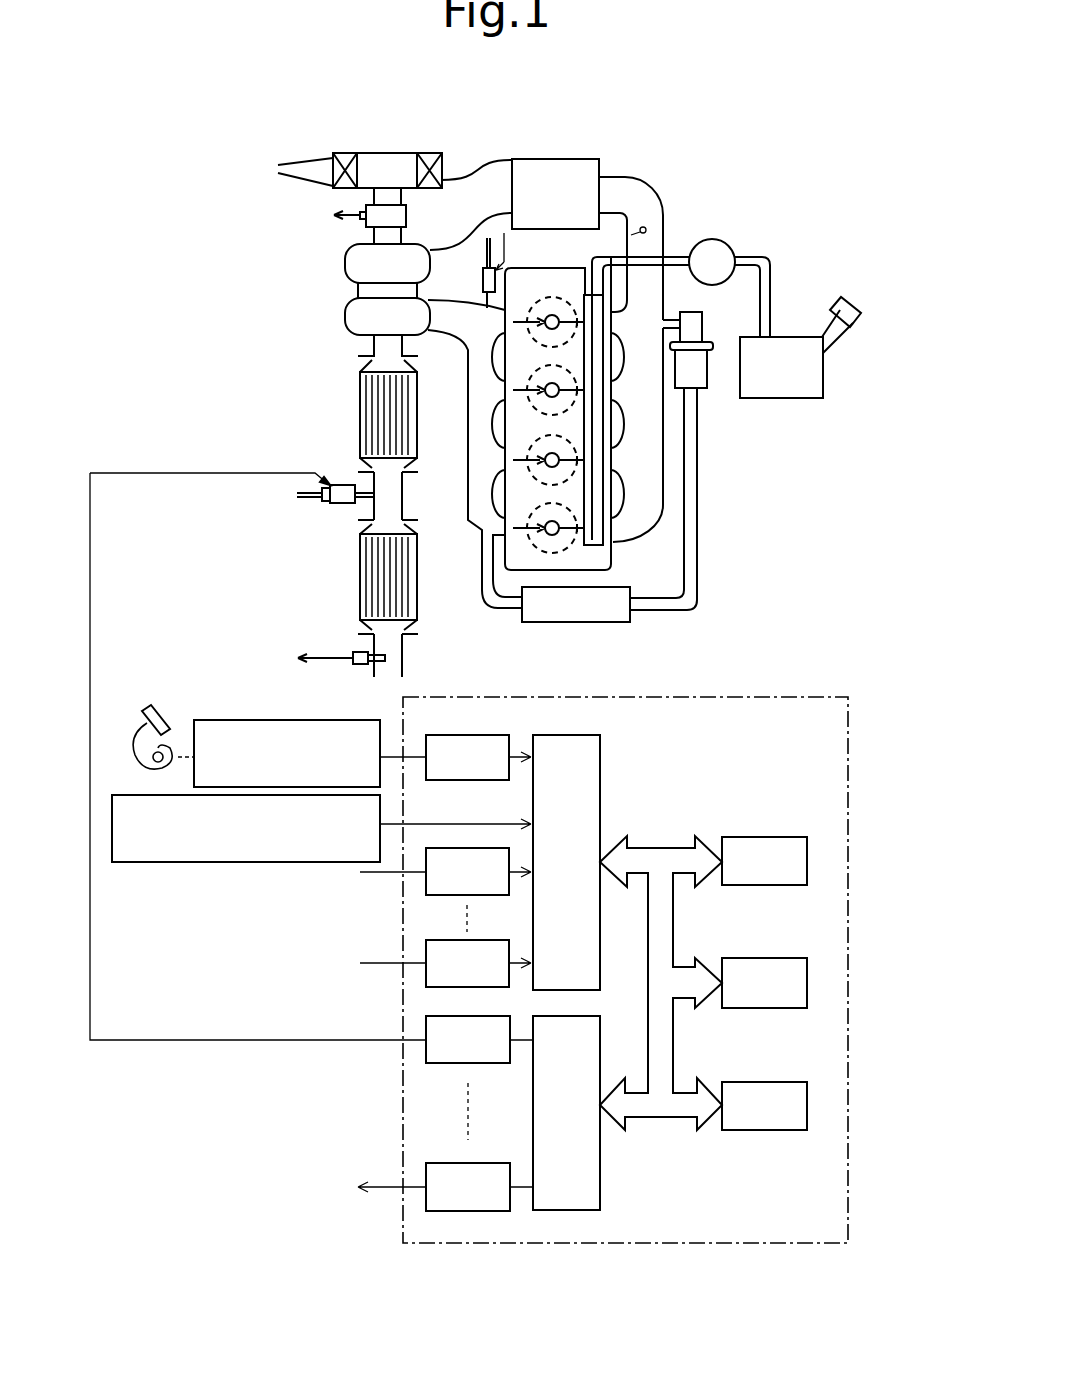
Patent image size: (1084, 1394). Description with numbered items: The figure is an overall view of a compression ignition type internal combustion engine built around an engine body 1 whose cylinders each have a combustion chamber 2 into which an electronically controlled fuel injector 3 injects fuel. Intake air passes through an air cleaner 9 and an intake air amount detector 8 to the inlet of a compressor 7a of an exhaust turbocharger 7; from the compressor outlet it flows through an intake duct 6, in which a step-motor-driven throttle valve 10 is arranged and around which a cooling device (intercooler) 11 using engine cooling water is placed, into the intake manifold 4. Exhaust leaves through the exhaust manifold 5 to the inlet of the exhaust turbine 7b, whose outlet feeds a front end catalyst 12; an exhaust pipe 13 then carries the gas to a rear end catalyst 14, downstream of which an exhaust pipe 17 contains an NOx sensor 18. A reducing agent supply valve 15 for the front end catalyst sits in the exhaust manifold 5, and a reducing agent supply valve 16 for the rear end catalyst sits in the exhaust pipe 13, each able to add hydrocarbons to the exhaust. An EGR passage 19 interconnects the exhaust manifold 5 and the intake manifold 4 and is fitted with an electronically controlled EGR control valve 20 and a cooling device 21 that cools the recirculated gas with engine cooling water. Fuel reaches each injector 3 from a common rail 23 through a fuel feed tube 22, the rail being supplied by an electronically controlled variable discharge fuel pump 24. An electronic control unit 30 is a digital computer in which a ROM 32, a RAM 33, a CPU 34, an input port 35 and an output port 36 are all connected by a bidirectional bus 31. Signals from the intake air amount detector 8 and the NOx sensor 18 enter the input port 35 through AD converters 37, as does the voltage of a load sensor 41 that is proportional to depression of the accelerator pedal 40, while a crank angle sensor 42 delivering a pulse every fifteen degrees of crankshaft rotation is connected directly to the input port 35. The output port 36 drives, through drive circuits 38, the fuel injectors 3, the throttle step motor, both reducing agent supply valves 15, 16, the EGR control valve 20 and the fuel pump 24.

The engine body 1 is at (614, 570).
The combustion chamber 2 is at (540, 308).
The electronically controlled fuel injector 3 is at (551, 314).
The intake manifold 4 is at (647, 511).
The exhaust manifold 5 is at (470, 504).
The intake duct 6 is at (639, 198).
The exhaust turbocharger 7 is at (339, 282).
The compressor 7a is at (352, 262).
The exhaust turbine 7b is at (346, 290).
The intake air amount detector 8 is at (364, 212).
The air cleaner 9 is at (393, 156).
The throttle valve 10 is at (646, 229).
The cooling device (intercooler) 11 is at (563, 167).
The front end catalyst 12 is at (367, 414).
The exhaust pipe 13 is at (403, 494).
The rear end catalyst 14 is at (367, 578).
The reducing agent supply valve for the front end catalyst 15 is at (483, 285).
The reducing agent supply valve for the rear end catalyst 16 is at (340, 506).
The exhaust pipe 17 is at (403, 661).
The NOx sensor 18 is at (362, 652).
The EGR passage 19 is at (698, 573).
The EGR control valve 20 is at (700, 329).
The cooling device 21 is at (580, 623).
The fuel feed tube 22 is at (568, 313).
The common rail 23 is at (598, 462).
The electronically controlled variable discharge fuel pump 24 is at (729, 247).
The electronic control unit 30 is at (849, 724).
The bidirectional bus 31 is at (658, 855).
The read only memory (ROM) 32 is at (757, 837).
The random access memory (RAM) 33 is at (757, 958).
The microprocessor (CPU) 34 is at (758, 1082).
The input port 35 is at (570, 735).
The output port 36 is at (600, 1176).
The AD converter 37 is at (467, 735).
The drive circuit 38 is at (426, 1173).
The accelerator pedal 40 is at (163, 720).
The load sensor 41 is at (290, 718).
The crank angle sensor 42 is at (238, 863).